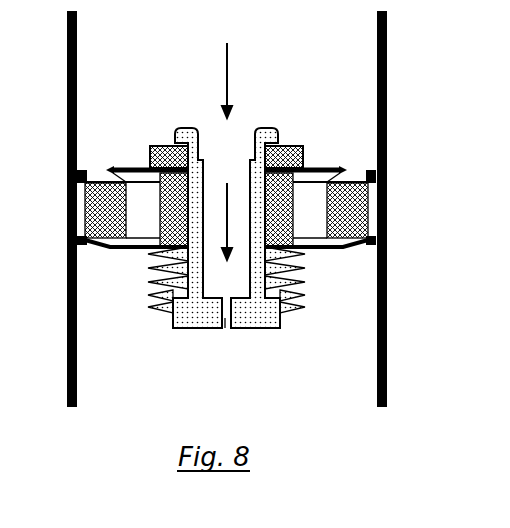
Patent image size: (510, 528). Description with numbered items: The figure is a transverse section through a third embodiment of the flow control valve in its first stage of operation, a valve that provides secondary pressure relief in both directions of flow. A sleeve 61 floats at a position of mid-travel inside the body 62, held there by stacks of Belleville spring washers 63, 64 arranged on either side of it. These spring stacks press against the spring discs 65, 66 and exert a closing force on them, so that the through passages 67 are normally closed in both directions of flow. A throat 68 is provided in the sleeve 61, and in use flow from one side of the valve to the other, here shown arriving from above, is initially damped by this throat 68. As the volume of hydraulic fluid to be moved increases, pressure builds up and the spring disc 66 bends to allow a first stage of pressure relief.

The sleeve 61 is at (278, 130).
The body 62 is at (350, 195).
The Belleville spring washers 63 is at (152, 153).
The Belleville spring washers 64 is at (150, 290).
The spring disc 65 is at (115, 168).
The spring disc 66 is at (322, 252).
The through passages 67 is at (145, 227).
The throat 68 is at (225, 320).